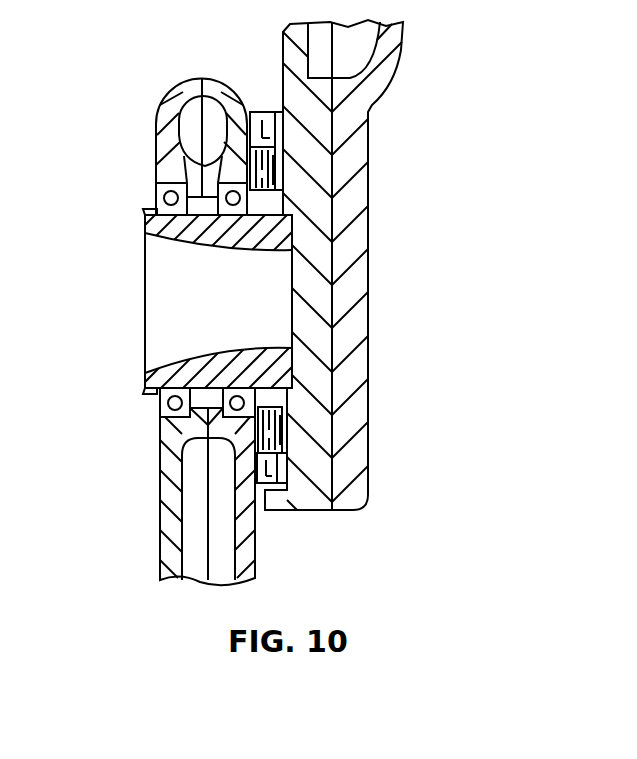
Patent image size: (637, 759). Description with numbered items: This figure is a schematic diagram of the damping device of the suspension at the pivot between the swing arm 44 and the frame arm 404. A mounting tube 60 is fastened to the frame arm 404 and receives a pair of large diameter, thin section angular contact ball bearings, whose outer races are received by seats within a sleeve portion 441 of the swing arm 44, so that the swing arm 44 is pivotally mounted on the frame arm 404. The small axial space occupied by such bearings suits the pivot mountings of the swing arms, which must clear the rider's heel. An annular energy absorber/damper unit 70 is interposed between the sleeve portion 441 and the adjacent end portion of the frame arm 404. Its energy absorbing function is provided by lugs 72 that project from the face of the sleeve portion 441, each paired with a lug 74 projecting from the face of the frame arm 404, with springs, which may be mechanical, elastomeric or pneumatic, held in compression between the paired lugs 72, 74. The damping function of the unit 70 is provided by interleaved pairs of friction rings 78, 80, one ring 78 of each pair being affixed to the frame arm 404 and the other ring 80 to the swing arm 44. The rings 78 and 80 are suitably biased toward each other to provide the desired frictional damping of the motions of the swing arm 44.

The frame arm 404 is at (370, 325).
The mounting tube 60 is at (146, 382).
The sleeve portion 441 is at (165, 100).
The friction ring 80 is at (283, 187).
The friction ring 78 is at (283, 176).
The lug 74 is at (274, 111).
The lug 72 is at (257, 112).
The swing arm 44 is at (160, 490).
The annular energy absorber/damper unit 70 is at (292, 482).